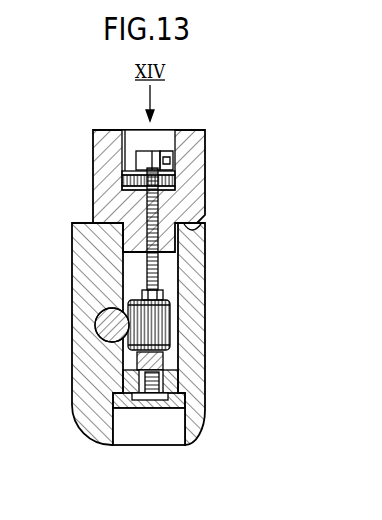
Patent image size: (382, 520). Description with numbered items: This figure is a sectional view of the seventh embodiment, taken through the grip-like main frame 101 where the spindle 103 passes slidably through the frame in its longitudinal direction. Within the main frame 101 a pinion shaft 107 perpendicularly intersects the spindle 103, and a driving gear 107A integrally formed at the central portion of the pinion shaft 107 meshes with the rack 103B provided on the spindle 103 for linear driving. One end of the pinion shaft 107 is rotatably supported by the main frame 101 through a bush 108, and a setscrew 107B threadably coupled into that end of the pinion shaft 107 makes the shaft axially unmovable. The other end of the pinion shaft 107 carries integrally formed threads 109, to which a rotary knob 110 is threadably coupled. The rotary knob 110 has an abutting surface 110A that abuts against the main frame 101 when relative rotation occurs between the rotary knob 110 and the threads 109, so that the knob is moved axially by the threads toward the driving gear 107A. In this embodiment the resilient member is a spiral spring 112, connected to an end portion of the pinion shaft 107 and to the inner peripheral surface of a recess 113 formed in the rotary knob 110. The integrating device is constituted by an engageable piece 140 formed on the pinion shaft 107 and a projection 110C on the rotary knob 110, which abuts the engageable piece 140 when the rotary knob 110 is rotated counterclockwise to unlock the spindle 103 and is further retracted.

The main frame 101 is at (197, 305).
The spindle 103 is at (112, 325).
The rack 103B is at (130, 292).
The pinion shaft 107 is at (160, 290).
The driving gear 107A is at (158, 327).
The setscrew 107B is at (157, 408).
The bush 108 is at (122, 374).
The threads 109 is at (122, 185).
The rotary knob 110 is at (112, 143).
The abutting surface 110A is at (200, 228).
The projection 110C is at (168, 150).
The spiral spring 112 is at (130, 172).
The recess 113 is at (125, 142).
The engageable piece 140 is at (151, 152).